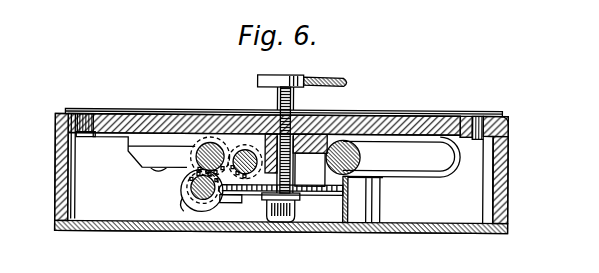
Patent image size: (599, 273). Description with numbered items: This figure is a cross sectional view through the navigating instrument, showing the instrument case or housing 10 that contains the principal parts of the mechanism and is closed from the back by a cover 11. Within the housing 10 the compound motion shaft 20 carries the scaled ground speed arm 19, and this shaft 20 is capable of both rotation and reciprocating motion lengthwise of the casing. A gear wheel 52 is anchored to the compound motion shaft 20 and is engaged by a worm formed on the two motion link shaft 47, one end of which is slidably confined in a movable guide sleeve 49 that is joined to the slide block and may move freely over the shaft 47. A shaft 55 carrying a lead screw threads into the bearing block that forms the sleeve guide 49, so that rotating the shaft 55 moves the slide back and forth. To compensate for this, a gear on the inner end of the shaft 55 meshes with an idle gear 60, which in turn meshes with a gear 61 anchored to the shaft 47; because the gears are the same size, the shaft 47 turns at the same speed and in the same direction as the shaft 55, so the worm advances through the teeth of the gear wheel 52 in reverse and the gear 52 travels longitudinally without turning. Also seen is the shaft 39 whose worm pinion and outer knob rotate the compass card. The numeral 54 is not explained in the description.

The instrument case or housing 10 is at (128, 120).
The cover 11 is at (459, 231).
The ground speed arm 19 is at (345, 86).
The compound motion shaft 20 is at (293, 98).
The shaft 39 is at (393, 156).
The two motion link shaft 47 is at (202, 201).
The movable guide sleeve 49 is at (183, 203).
The gear wheel 52 is at (281, 203).
The pinion 54 is at (244, 141).
The shaft 55 is at (243, 197).
The idle gear 60 is at (190, 151).
The gear 61 is at (183, 188).